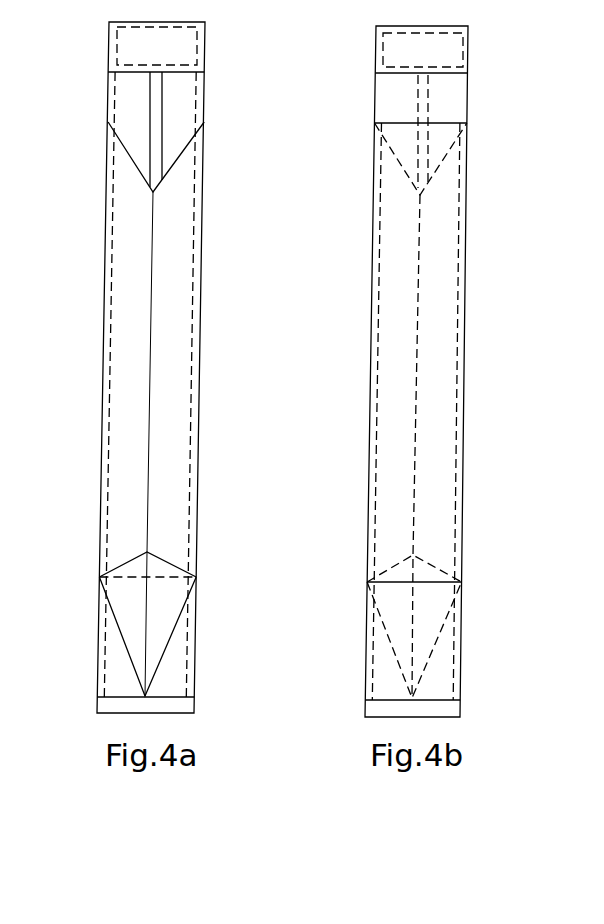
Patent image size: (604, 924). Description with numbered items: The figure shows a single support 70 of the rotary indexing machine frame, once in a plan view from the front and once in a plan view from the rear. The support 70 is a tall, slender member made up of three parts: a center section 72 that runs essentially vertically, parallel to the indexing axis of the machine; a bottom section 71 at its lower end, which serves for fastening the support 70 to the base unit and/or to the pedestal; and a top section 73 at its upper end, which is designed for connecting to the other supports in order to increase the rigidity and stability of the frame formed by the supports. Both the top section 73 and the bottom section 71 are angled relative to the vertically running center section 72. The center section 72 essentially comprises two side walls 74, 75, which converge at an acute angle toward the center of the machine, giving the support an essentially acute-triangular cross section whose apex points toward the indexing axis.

In FIG. 4A, the support 70 is at (158, 367).
In FIG. 4B, the support 70 is at (435, 371).
In FIG. 4A, the bottom section 71 is at (200, 634).
In FIG. 4B, the bottom section 71 is at (293, 635).
In FIG. 4A, the center section 72 is at (167, 384).
In FIG. 4B, the center section 72 is at (368, 371).
In FIG. 4A, the top section 73 is at (207, 103).
In FIG. 4B, the top section 73 is at (374, 95).
In FIG. 4A, the side wall 74 is at (128, 338).
In FIG. 4A, the side wall 75 is at (172, 437).